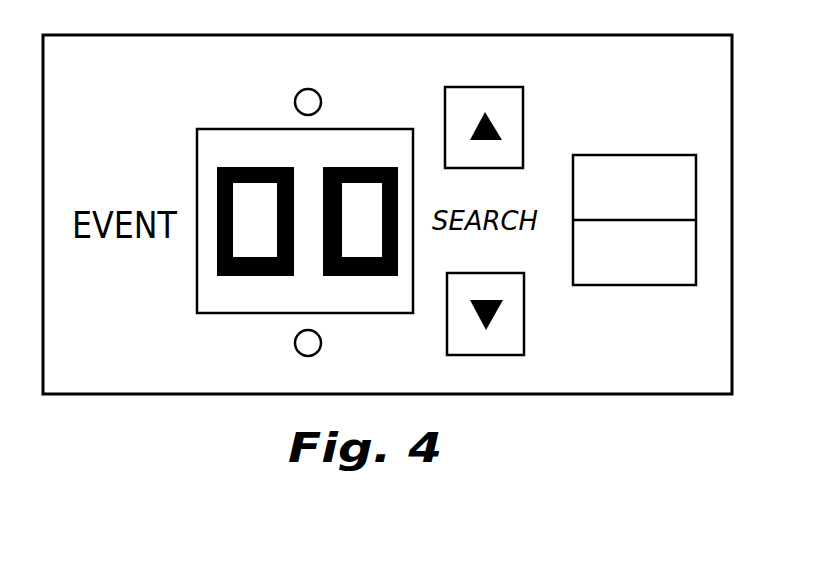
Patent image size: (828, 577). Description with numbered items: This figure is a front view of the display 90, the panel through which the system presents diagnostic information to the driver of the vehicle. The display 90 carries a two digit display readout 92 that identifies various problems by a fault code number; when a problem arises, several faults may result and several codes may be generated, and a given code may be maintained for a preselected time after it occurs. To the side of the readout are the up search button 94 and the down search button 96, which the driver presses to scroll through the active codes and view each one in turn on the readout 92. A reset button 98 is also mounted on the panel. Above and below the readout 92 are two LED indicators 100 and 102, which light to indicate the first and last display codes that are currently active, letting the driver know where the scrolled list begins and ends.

The display 90 is at (663, 396).
The two digit display readout 92 is at (348, 128).
The up search button 94 is at (524, 121).
The down search button 96 is at (525, 311).
The reset button 98 is at (640, 287).
The LED indicator 100 is at (295, 103).
The LED indicator 102 is at (295, 342).